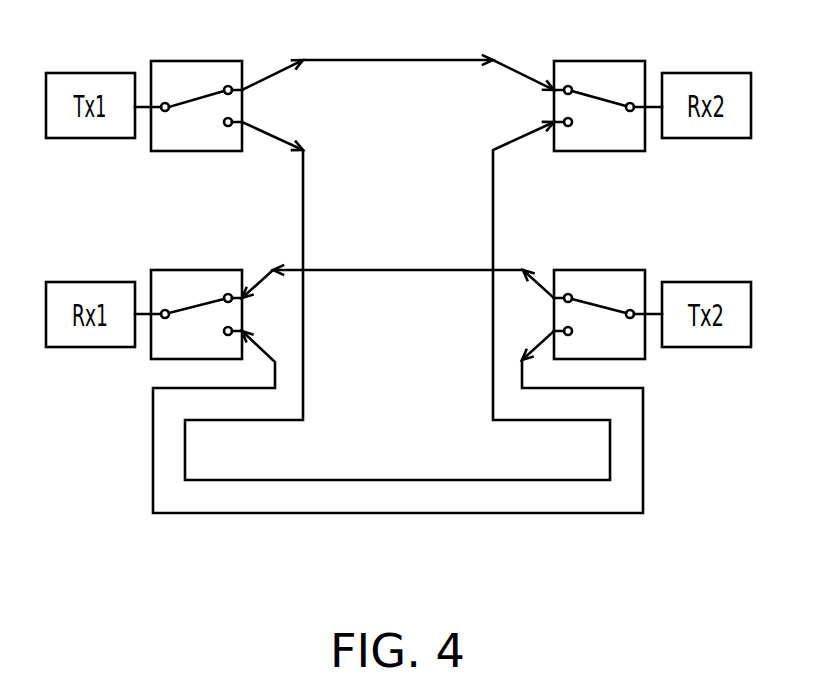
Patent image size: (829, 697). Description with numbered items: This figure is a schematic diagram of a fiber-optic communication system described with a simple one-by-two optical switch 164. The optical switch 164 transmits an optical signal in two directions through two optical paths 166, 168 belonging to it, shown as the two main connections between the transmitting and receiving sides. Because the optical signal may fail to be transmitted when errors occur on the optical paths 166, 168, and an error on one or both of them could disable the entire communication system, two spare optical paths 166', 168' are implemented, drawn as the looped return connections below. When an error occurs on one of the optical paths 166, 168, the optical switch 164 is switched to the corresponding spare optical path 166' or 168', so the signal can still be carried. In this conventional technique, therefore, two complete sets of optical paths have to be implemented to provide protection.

The optical switch 164 is at (197, 61).
The optical path 166 is at (398, 53).
The spare optical path 166' is at (397, 301).
The optical path 168 is at (398, 262).
The spare optical path 168' is at (398, 445).